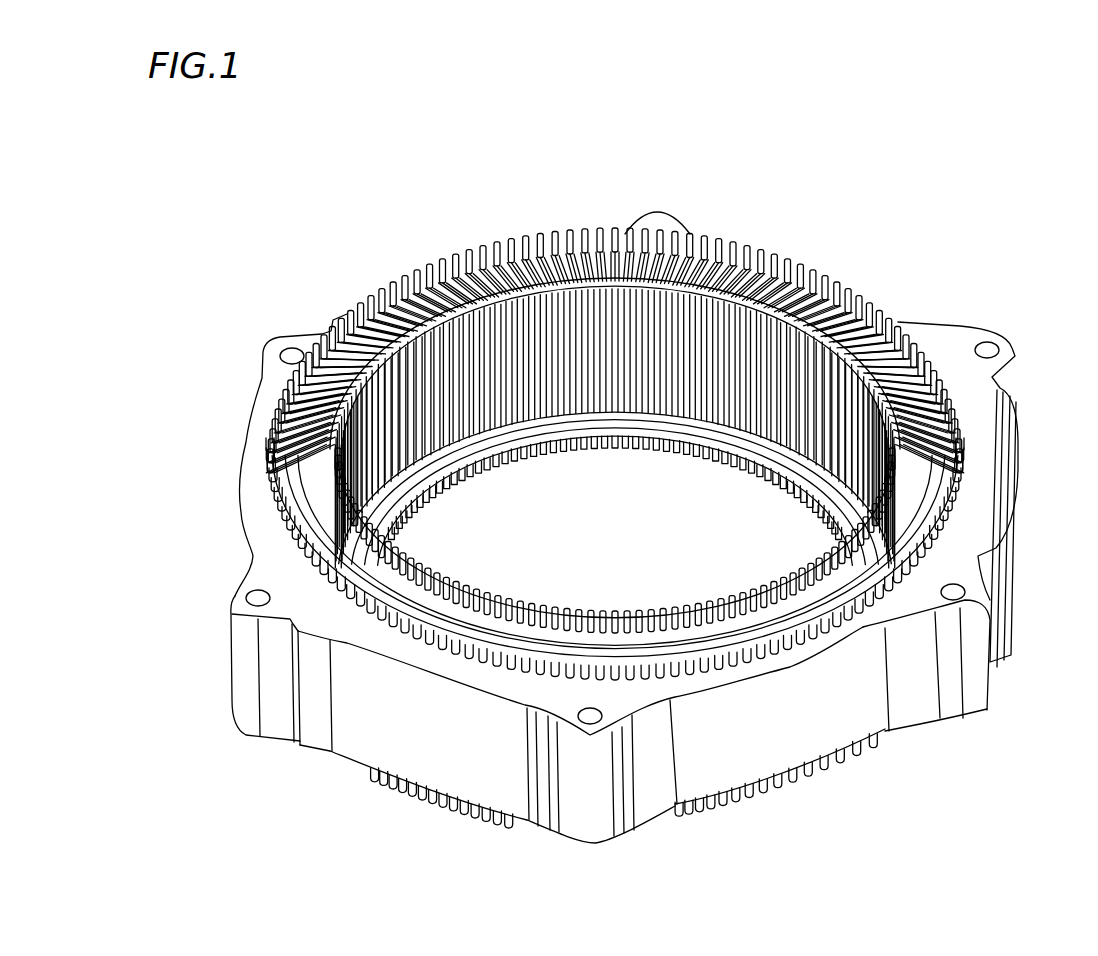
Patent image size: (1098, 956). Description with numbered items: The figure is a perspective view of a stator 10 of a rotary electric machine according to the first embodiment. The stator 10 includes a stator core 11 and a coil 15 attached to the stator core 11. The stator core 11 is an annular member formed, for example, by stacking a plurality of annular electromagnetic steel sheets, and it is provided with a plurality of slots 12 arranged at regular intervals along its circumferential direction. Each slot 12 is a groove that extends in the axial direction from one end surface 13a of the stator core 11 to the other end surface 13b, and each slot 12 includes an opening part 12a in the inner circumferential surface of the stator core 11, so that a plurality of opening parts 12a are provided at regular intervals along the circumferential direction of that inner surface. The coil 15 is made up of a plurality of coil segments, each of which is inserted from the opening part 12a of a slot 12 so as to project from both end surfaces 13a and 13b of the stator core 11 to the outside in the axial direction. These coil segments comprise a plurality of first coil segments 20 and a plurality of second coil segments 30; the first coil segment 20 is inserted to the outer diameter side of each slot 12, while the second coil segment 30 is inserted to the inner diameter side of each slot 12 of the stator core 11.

The stator 10 is at (915, 187).
The stator core 11 is at (1014, 533).
The slot 12 is at (775, 632).
The opening part 12a is at (655, 442).
The one end surface 13a is at (250, 488).
The other end surface 13b is at (347, 766).
The coil 15 is at (800, 166).
The first coil segment 20 is at (735, 237).
The second coil segment 30 is at (752, 241).